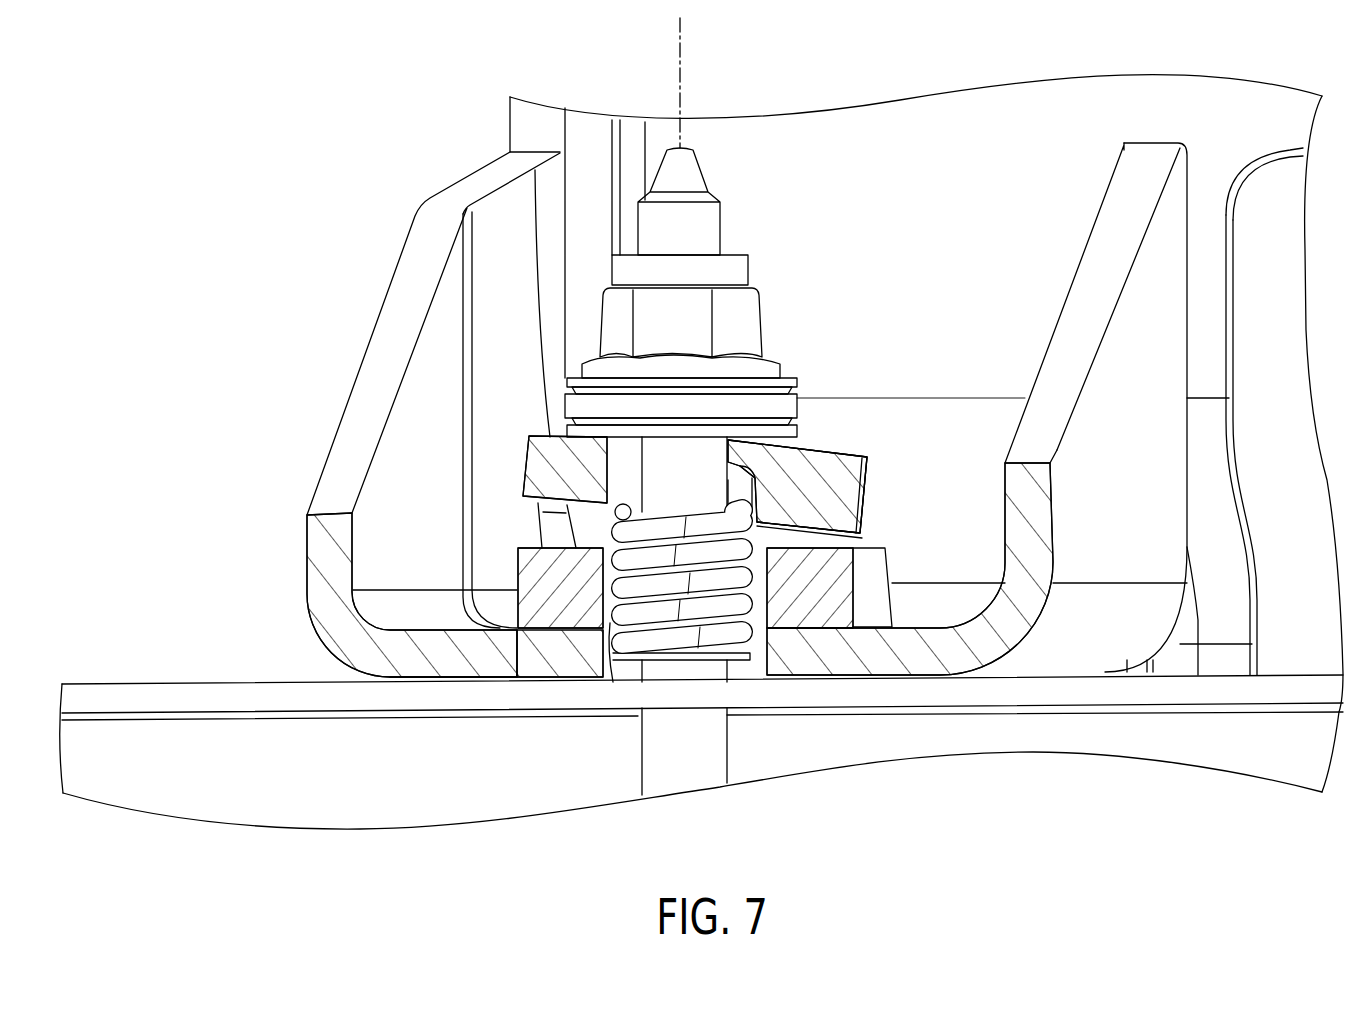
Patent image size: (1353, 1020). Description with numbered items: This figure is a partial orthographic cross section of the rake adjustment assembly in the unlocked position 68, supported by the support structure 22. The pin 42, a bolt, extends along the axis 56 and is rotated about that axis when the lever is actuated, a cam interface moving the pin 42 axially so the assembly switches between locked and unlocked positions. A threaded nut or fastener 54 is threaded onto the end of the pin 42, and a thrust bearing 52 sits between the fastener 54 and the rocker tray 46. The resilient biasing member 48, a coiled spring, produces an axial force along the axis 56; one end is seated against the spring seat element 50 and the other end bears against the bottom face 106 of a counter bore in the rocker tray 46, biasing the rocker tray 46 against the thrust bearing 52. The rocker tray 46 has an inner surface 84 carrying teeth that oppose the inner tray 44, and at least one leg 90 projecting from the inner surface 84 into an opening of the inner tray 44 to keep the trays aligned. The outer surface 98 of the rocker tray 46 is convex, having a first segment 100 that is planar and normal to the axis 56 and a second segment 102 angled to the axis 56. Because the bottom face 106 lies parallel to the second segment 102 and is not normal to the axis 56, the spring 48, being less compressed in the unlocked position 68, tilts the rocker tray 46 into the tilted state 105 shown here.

The support structure 22 is at (1100, 236).
The pin 42 is at (722, 218).
The inner tray 44 is at (895, 607).
The rocker tray 46 is at (870, 470).
The resilient biasing member 48 is at (663, 655).
The spring seat element 50 is at (612, 650).
The thrust bearing 52 is at (800, 400).
The fastener 54 is at (762, 310).
The axis 56 is at (680, 82).
The unlocked position 68 is at (332, 202).
The inner surface 84 is at (545, 545).
The leg 90 is at (768, 627).
The outer surface 98 is at (827, 447).
The first segment 100 is at (843, 447).
The second segment 102 is at (553, 437).
The tilted state 105 is at (503, 462).
The bottom face 106 is at (760, 507).